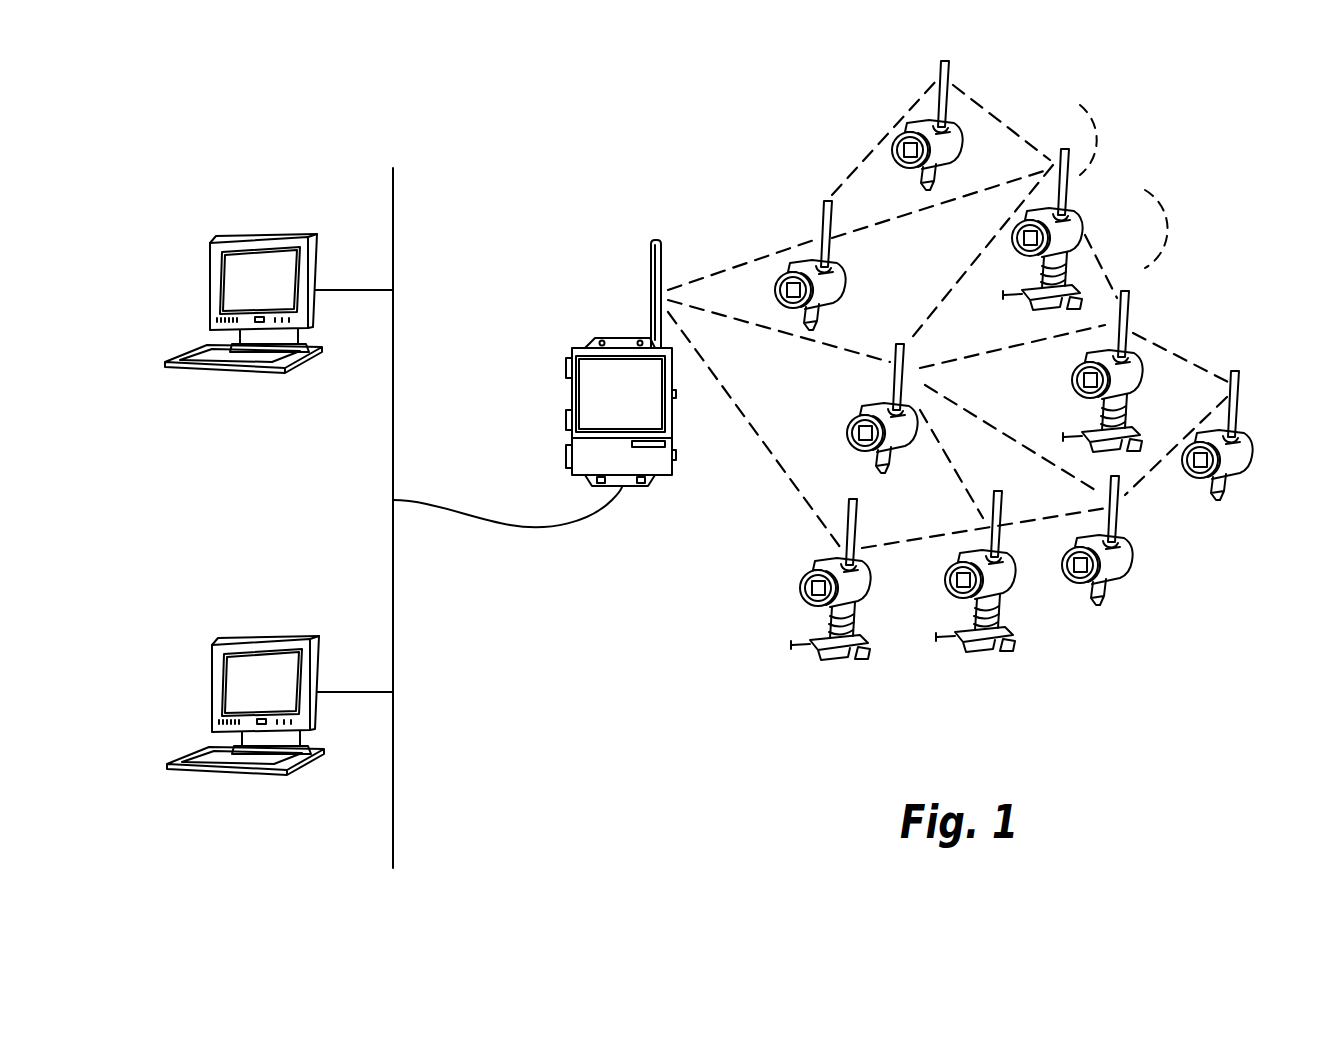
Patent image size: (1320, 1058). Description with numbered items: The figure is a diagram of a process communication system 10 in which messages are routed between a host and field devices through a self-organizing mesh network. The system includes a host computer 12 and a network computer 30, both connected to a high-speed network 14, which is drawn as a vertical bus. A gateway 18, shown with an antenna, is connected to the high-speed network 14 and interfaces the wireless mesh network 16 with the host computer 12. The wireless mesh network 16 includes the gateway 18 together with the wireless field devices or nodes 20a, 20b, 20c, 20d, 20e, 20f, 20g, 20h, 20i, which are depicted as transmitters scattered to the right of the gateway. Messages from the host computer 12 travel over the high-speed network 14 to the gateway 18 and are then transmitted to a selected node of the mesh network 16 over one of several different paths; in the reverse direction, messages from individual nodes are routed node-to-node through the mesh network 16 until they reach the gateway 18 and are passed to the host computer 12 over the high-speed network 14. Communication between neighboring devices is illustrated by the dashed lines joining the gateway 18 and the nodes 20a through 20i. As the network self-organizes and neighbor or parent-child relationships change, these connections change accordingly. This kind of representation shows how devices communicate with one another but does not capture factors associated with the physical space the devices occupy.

The process communication system 10 is at (640, 92).
The host computer 12 is at (213, 279).
The high-speed network 14 is at (395, 216).
The wireless mesh network 16 is at (728, 633).
The gateway 18 is at (573, 396).
The network computer 30 is at (195, 663).
The wireless field device 20a is at (836, 283).
The wireless field device 20b is at (903, 430).
The wireless field device 20c is at (856, 586).
The wireless field device 20d is at (948, 150).
The wireless field device 20e is at (1000, 578).
The wireless field device 20f is at (1078, 232).
The wireless field device 20g is at (1122, 378).
The wireless field device 20h is at (1115, 565).
The wireless field device 20i is at (1238, 462).